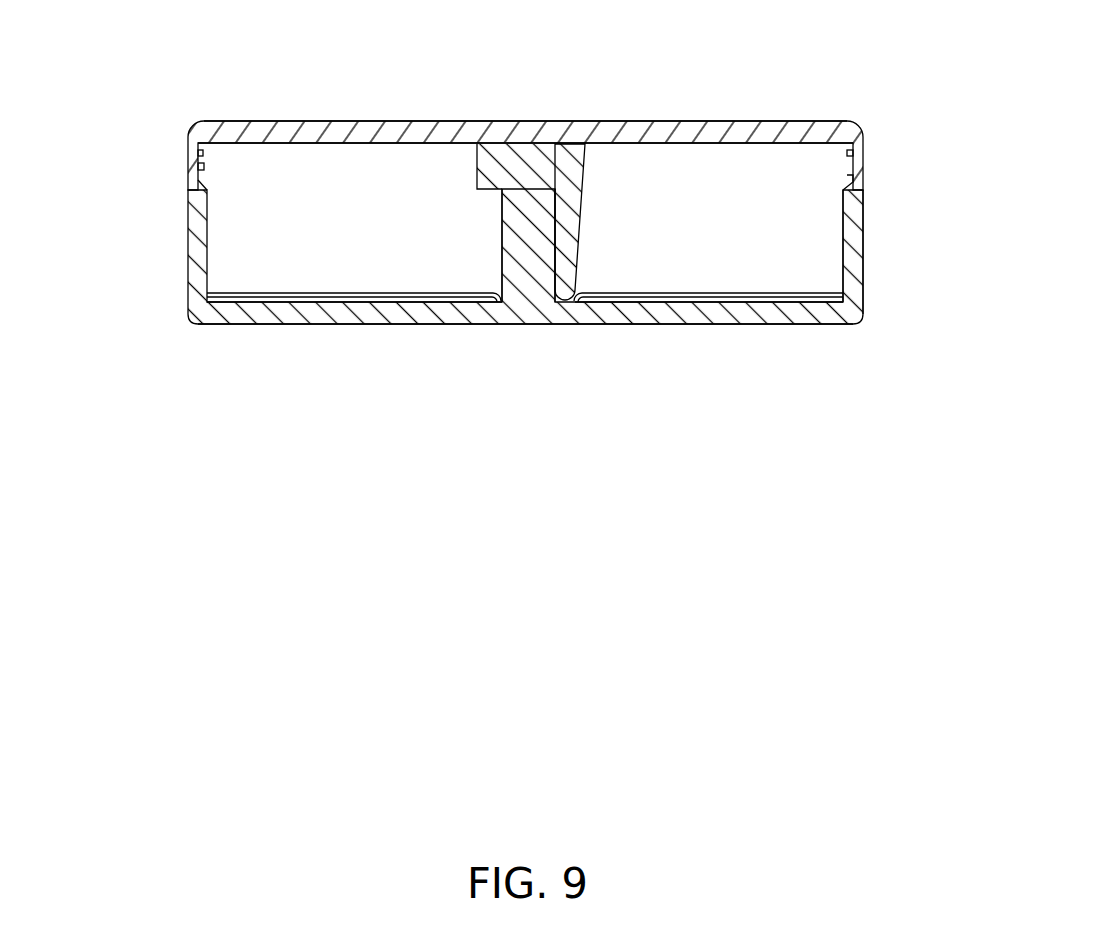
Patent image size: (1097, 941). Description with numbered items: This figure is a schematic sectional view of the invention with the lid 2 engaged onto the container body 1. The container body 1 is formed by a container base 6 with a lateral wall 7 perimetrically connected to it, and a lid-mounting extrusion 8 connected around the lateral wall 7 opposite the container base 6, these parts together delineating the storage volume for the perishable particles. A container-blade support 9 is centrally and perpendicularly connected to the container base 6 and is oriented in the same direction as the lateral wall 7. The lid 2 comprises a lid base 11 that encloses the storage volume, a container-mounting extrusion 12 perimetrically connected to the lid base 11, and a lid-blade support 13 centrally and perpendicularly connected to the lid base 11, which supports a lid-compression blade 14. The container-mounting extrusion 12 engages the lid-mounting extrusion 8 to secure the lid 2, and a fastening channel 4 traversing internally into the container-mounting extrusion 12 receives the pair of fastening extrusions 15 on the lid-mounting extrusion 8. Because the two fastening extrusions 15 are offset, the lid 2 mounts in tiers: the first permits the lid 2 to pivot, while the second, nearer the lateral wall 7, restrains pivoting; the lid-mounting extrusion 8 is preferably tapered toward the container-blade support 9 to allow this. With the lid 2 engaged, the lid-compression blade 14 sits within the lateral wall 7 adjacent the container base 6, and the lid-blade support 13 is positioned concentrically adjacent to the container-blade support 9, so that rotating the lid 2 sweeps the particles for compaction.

The container body 1 is at (124, 245).
The lid 2 is at (106, 120).
The fastening channel 4 is at (197, 163).
The container base 6 is at (512, 313).
The lateral wall 7 is at (857, 248).
The lid-mounting extrusion 8 is at (845, 180).
The container-blade support 9 is at (507, 265).
The lid base 11 is at (658, 125).
The container-mounting extrusion 12 is at (862, 157).
The lid-blade support 13 is at (483, 158).
The lid-compression blade 14 is at (575, 227).
The pair of fastening extrusions 15 is at (197, 168).